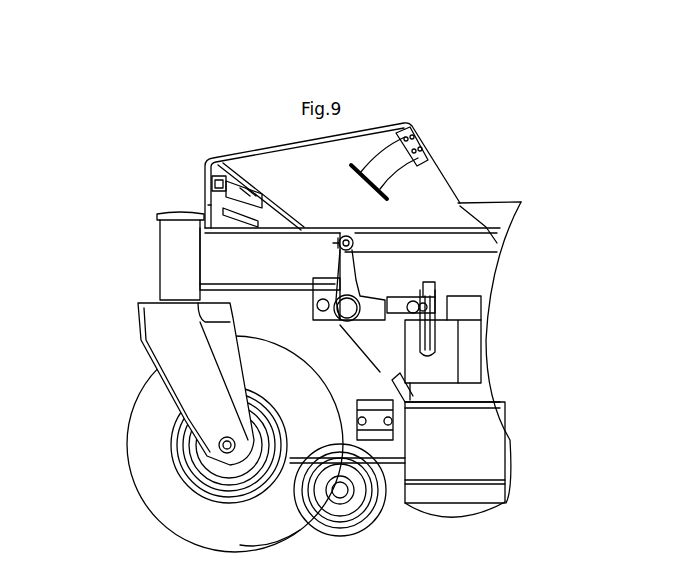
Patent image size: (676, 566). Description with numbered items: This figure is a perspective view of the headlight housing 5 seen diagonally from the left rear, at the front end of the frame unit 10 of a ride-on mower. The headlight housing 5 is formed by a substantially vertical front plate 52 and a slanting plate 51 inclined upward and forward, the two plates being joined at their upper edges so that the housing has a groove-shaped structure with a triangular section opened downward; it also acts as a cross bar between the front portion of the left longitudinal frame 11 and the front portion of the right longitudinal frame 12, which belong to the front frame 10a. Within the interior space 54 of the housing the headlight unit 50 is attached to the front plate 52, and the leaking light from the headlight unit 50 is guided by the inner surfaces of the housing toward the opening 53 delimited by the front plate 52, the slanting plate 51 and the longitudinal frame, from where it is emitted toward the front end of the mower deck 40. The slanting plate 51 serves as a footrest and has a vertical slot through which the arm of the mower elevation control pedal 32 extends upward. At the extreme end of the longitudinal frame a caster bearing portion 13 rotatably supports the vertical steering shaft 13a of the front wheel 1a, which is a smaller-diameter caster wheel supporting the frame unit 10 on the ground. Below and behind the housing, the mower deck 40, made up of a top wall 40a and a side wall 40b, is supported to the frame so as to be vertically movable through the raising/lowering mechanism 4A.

The front wheel 1a is at (130, 476).
The raising/lowering mechanism 4A is at (427, 254).
The headlight housing 5 is at (304, 188).
The frame unit 10 is at (217, 382).
The front frame 10a is at (283, 302).
The left longitudinal frame 11 is at (265, 266).
The right longitudinal frame 12 is at (484, 207).
The caster bearing portion 13 is at (147, 237).
The vertical steering shaft 13a is at (186, 210).
The mower elevation control pedal 32 is at (433, 148).
The mower deck 40 is at (409, 381).
The top wall 40a is at (485, 394).
The side wall 40b is at (504, 450).
The headlight unit 50 is at (220, 177).
The slanting plate 51 is at (292, 178).
The front plate 52 is at (205, 170).
The opening 53 is at (239, 232).
The interior space 54 is at (281, 232).